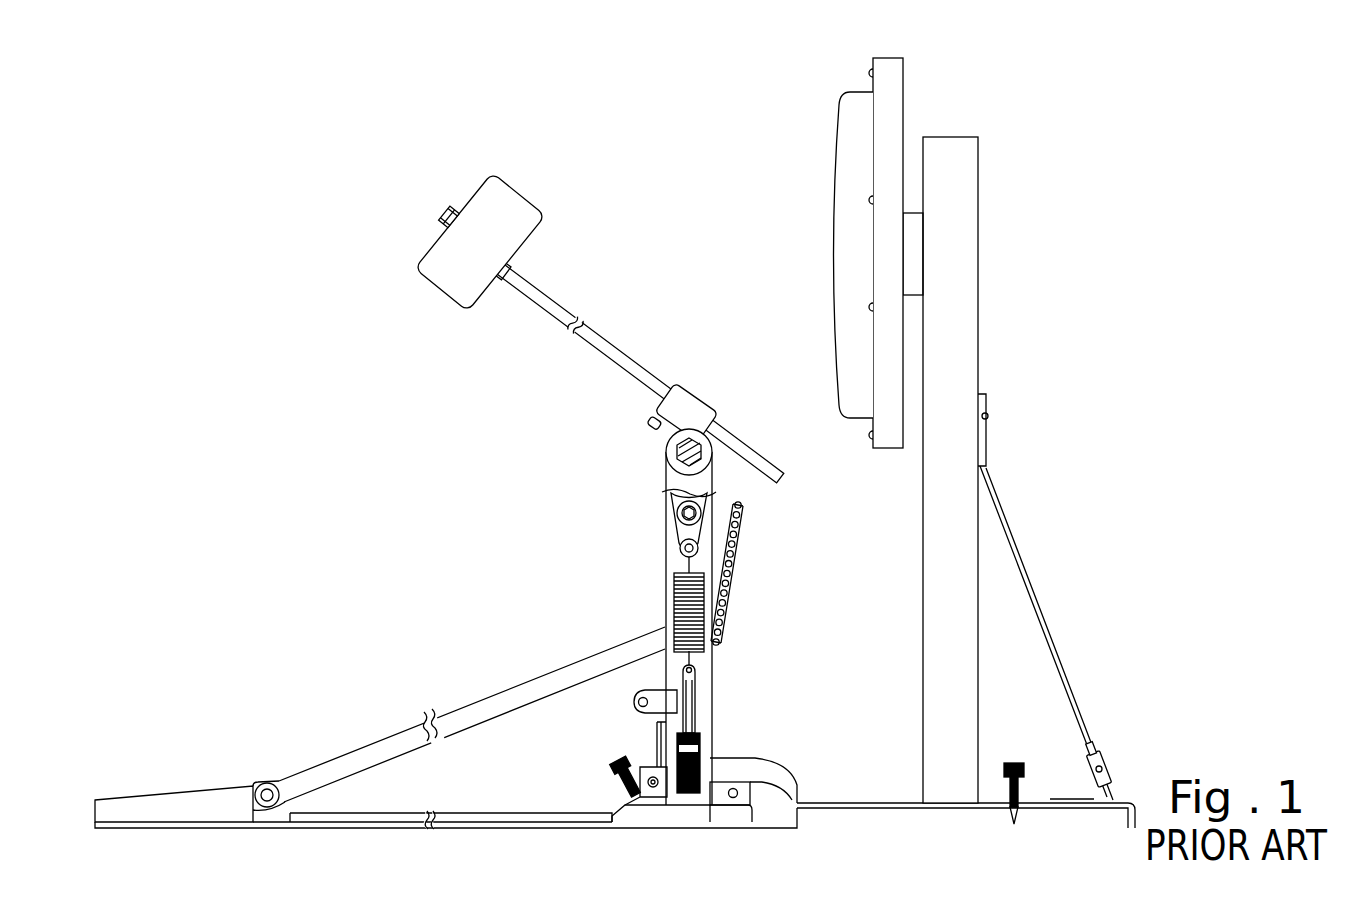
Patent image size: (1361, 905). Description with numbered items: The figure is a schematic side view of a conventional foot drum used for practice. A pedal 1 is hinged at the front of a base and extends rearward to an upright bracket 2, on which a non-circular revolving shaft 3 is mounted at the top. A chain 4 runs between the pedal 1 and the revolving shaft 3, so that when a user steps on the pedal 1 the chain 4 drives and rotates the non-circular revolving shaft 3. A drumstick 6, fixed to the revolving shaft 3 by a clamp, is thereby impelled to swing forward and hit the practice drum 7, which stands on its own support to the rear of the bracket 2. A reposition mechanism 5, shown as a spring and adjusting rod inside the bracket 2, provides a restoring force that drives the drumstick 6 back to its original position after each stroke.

The pedal 1 is at (338, 760).
The bracket 2 is at (676, 564).
The non-circular revolving shaft 3 is at (677, 445).
The chain 4 is at (740, 552).
The reposition mechanism 5 is at (702, 702).
The drumstick 6 is at (510, 200).
The practice drum 7 is at (853, 165).